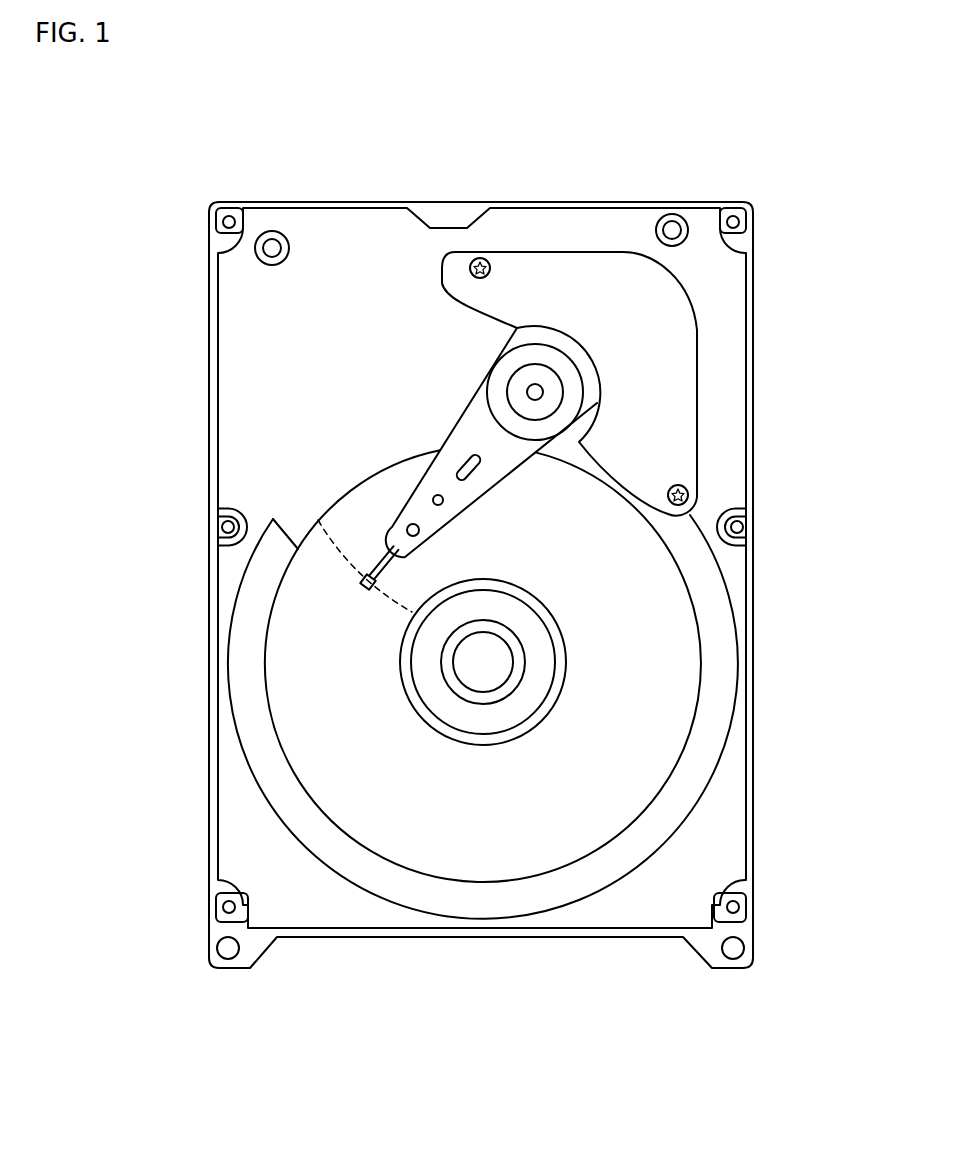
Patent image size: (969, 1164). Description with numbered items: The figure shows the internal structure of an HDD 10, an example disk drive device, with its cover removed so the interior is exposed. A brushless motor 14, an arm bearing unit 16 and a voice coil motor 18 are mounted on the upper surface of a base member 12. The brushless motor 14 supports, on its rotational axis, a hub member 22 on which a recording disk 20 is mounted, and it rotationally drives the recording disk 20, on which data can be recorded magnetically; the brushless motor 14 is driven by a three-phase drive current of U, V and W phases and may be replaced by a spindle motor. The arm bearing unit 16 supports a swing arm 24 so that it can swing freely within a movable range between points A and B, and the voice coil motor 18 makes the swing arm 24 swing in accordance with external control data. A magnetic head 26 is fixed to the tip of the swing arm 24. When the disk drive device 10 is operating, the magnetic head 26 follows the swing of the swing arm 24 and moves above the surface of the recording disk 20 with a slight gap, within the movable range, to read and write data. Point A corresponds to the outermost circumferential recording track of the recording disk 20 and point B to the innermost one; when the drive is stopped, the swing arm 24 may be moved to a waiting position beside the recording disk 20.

The HDD (disk drive device) 10 is at (598, 157).
The base member 12 is at (754, 297).
The brushless motor 14 is at (552, 633).
The arm bearing unit 16 is at (585, 392).
The voice coil motor 18 is at (661, 289).
The recording disk 20 is at (668, 698).
The hub member 22 is at (527, 697).
The swing arm 24 is at (458, 422).
The magnetic head 26 is at (366, 582).